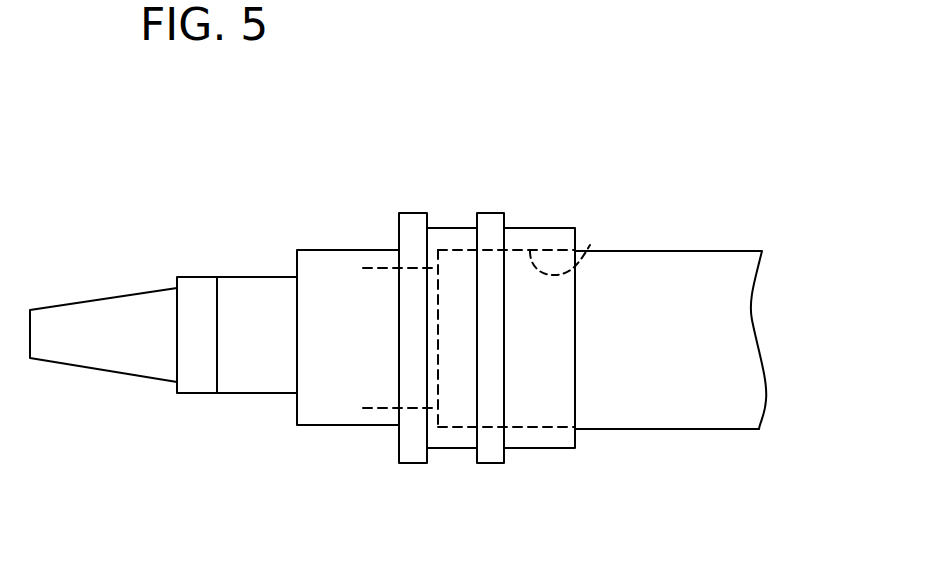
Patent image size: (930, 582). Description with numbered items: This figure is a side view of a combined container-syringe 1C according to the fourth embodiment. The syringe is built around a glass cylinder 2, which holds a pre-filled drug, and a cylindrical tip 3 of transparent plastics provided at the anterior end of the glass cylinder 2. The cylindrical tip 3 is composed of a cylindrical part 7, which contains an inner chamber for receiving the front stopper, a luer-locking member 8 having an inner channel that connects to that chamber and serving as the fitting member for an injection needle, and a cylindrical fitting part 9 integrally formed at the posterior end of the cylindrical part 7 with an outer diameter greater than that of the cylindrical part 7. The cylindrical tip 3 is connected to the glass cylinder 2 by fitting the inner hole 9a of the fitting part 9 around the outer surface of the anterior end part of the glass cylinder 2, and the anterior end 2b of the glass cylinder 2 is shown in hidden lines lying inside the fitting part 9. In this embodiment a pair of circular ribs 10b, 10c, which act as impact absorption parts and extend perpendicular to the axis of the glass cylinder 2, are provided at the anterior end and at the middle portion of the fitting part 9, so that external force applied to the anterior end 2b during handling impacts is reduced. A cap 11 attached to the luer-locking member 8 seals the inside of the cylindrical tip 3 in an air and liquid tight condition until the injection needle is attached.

The combined container-syringe 1C is at (681, 190).
The glass cylinder 2 is at (690, 251).
The anterior end of the glass cylinder 2b is at (440, 232).
The cylindrical tip 3 is at (337, 434).
The cylindrical part 7 is at (333, 250).
The luer-locking member 8 is at (258, 277).
The cylindrical fitting part 9 is at (535, 227).
The inner hole of the fitting part 9a is at (590, 245).
The circular rib 10b is at (405, 213).
The circular rib 10c is at (490, 213).
The cap 11 is at (135, 288).